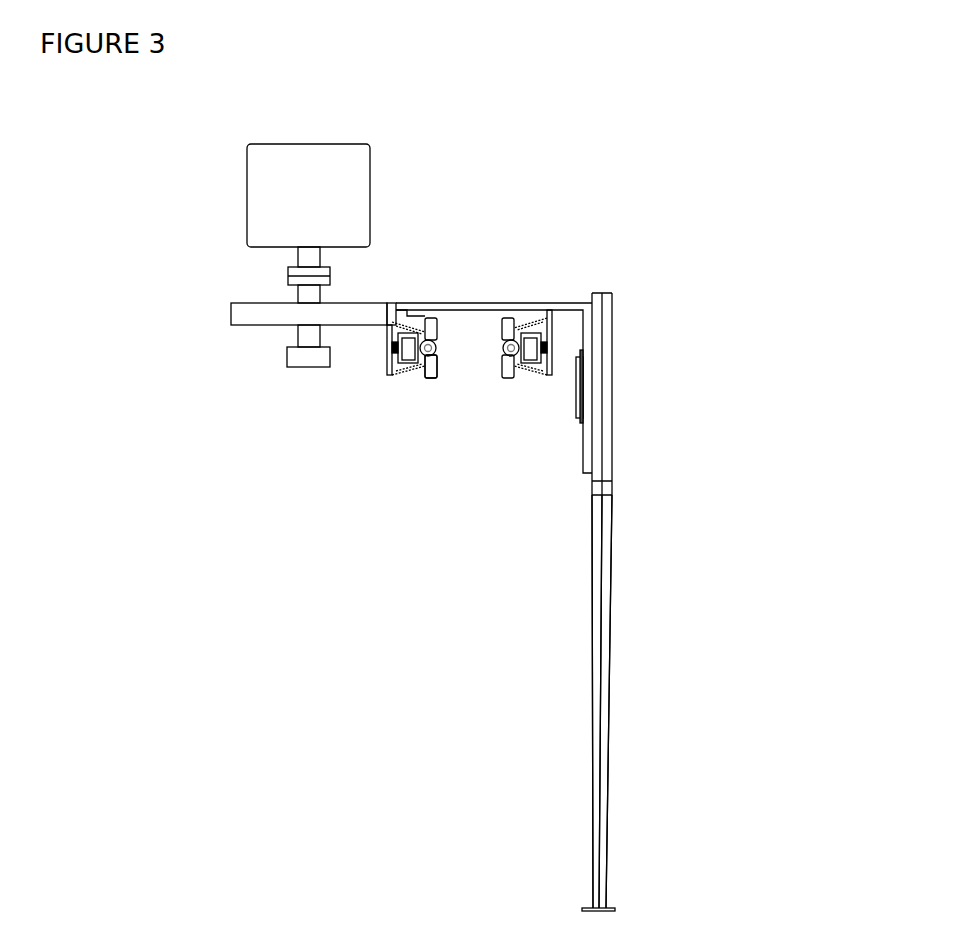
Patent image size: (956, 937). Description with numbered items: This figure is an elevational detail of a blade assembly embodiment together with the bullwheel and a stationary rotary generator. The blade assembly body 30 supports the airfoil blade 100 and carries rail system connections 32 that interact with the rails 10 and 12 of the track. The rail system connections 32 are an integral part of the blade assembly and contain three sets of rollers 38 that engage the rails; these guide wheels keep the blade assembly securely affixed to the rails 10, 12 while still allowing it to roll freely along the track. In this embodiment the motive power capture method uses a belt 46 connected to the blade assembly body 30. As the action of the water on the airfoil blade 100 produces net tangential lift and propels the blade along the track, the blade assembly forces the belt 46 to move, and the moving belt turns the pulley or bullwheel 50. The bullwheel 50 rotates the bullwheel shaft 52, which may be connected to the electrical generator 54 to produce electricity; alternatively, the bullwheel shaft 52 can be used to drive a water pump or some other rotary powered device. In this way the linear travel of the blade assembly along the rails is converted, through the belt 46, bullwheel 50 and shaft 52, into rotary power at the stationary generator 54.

The rail 10 is at (437, 342).
The rail 12 is at (496, 344).
The blade assembly body 30 is at (576, 299).
The rail system connections 32 is at (412, 372).
The rollers 38 is at (434, 381).
The belt 46 is at (391, 301).
The bullwheel 50 is at (230, 313).
The bullwheel shaft 52 is at (287, 276).
The electrical generator 54 is at (247, 194).
The blade 100 is at (590, 609).